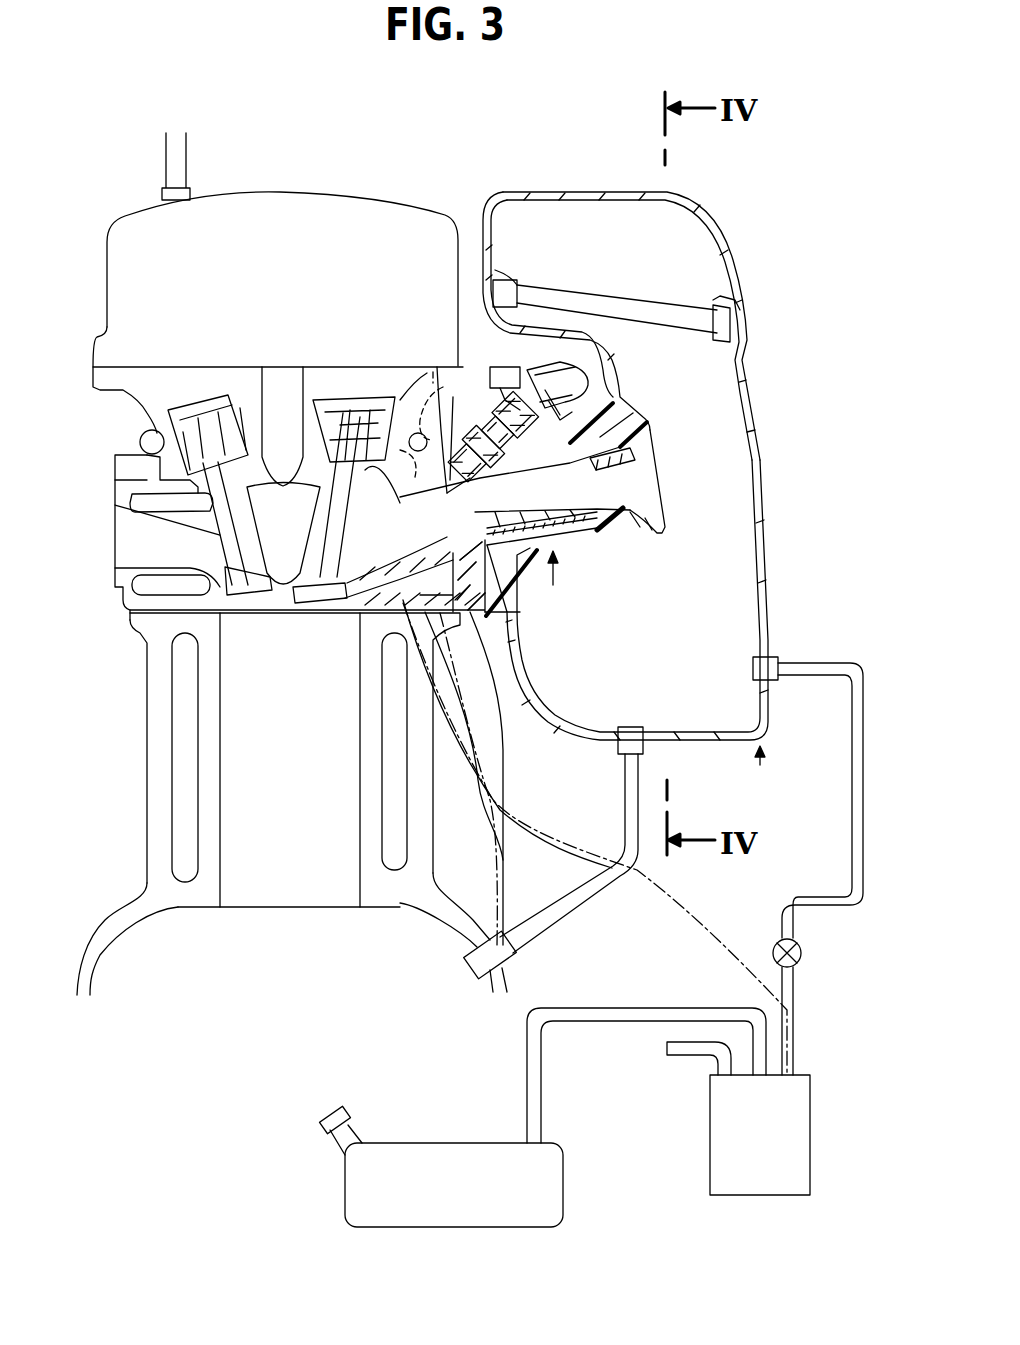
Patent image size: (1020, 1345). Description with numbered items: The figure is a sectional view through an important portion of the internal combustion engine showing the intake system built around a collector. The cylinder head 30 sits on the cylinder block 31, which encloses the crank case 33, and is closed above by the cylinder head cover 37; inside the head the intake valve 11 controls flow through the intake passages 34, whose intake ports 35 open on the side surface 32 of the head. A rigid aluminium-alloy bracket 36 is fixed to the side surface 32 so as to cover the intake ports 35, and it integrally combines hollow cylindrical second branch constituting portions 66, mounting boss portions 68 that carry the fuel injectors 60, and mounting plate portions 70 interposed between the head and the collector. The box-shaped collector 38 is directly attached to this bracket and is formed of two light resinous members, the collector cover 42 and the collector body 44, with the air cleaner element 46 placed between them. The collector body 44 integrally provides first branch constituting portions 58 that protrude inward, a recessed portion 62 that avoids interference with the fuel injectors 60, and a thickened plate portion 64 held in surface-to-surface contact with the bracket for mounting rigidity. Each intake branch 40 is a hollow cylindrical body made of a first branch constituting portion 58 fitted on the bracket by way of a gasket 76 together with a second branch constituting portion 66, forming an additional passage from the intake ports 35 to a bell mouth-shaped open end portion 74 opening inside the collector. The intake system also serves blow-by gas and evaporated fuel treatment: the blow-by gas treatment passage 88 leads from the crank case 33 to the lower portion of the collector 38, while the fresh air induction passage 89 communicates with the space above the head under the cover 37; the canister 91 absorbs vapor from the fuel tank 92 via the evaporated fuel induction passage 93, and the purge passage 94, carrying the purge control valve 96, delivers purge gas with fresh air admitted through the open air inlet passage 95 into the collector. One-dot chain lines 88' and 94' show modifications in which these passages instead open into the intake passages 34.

The intake valve 11 is at (445, 497).
The cylinder head 30 is at (100, 493).
The cylinder block 31 is at (120, 681).
The side surface 32 is at (480, 547).
The crank case 33 is at (140, 937).
The intake passages 34 is at (400, 503).
The intake ports 35 is at (438, 367).
The bracket 36 is at (550, 725).
The cylinder head cover 37 is at (337, 213).
The collector 38 is at (760, 765).
The intake branches 40 is at (553, 585).
The collector cover 42 is at (712, 213).
The collector body 44 is at (765, 563).
The air cleaner element 46 is at (687, 320).
The first branch constituting portions 58 is at (620, 520).
The fuel injectors 60 is at (500, 362).
The recessed portion 62 is at (580, 362).
The plate portion 64 is at (507, 590).
The second branch constituting portions 66 is at (560, 520).
The mounting boss portions 68 is at (455, 397).
The mounting plate portions 70 is at (493, 670).
The bell mouth-shaped open end portion 74 is at (660, 448).
The gasket 76 is at (590, 517).
The blow-by gas treatment passage 88 is at (555, 866).
The one-dot chain line 88' is at (511, 779).
The fresh air induction passage 89 is at (173, 168).
The canister 91 is at (710, 1160).
The fuel tank 92 is at (522, 1228).
The evaporated fuel induction passage 93 is at (585, 1022).
The purge passage 94 is at (809, 866).
The one-dot chain line 94' is at (595, 839).
The open air inlet passage 95 is at (680, 1055).
The purge control valve 96 is at (803, 955).